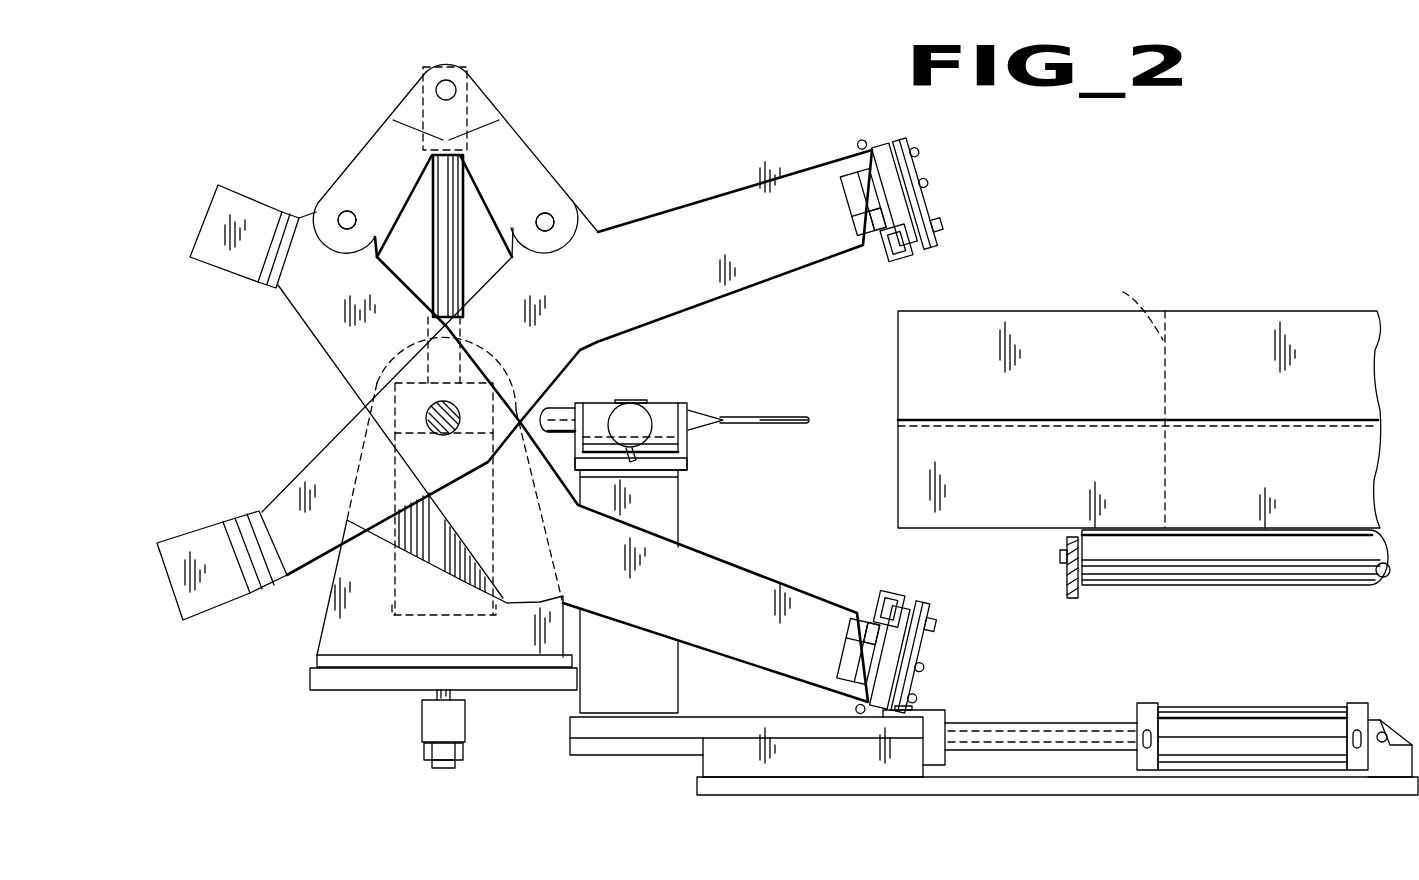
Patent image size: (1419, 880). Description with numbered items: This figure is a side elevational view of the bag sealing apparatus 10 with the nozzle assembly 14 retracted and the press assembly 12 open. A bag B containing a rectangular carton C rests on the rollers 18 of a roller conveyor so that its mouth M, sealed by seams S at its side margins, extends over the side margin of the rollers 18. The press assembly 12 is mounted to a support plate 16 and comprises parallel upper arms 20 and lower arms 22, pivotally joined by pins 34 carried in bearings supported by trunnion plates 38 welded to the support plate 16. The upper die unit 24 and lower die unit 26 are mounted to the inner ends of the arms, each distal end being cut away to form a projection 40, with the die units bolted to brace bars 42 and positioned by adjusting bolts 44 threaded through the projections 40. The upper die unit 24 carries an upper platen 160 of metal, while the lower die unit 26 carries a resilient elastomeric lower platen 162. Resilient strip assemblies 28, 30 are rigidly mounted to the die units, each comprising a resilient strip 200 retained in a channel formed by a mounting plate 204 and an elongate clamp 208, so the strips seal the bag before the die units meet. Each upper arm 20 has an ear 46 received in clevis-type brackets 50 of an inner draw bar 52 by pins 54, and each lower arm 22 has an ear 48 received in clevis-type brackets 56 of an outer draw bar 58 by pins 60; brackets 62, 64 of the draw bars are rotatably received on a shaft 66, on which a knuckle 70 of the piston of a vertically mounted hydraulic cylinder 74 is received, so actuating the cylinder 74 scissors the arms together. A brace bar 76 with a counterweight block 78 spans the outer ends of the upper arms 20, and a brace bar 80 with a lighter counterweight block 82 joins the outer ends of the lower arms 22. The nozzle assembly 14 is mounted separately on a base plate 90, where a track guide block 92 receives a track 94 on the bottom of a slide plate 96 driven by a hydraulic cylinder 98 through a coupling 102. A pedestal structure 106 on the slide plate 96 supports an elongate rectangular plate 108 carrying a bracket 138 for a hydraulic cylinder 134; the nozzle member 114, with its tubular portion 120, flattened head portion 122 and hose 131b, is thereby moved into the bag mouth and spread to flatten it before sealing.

The bag sealing apparatus 10 is at (688, 97).
The press assembly 12 is at (305, 327).
The nozzle assembly 14 is at (692, 478).
The support plate 16 is at (310, 681).
The rollers 18 is at (1210, 585).
The upper arms 20 is at (665, 263).
The lower arms 22 is at (712, 603).
The upper die unit 24 is at (850, 205).
The lower die unit 26 is at (845, 653).
The resilient strip assembly 28 is at (950, 226).
The resilient strip assembly 30 is at (942, 614).
The pins 34 is at (443, 436).
The trunnion plates 38 is at (327, 610).
The projection 40 is at (874, 148).
The brace bars 42 is at (855, 225).
The adjusting bolts 44 is at (862, 142).
The ear 46 is at (565, 194).
The ear 48 is at (328, 192).
The clevis-type brackets 50 is at (572, 203).
The inner draw bar 52 is at (503, 124).
The pins 54 is at (535, 222).
The clevis-type brackets 56 is at (332, 210).
The outer draw bar 58 is at (392, 130).
The pins 60 is at (357, 221).
The brackets 62 is at (490, 102).
The brackets 64 is at (397, 106).
The shaft 66 is at (457, 88).
The knuckle 70 is at (420, 93).
The hydraulic cylinder 74 is at (432, 565).
The brace bar 76 is at (247, 520).
The counterweight block 78 is at (197, 535).
The brace bar 80 is at (268, 283).
The counterweight block 82 is at (203, 256).
The base plate 90 is at (700, 790).
The track guide block 92 is at (705, 769).
The track 94 is at (575, 751).
The slide plate 96 is at (575, 731).
The hydraulic cylinder 98 is at (1247, 714).
The coupling 102 is at (948, 717).
The pedestal structure 106 is at (676, 513).
The elongate rectangular plate 108 is at (682, 464).
The nozzle member 114 is at (792, 415).
The tubular portion 120 is at (696, 410).
The flattened head portion 122 is at (732, 416).
The hose 131b is at (560, 410).
The hydraulic cylinder 134 is at (645, 436).
The bracket 138 is at (682, 442).
The upper platen 160 is at (884, 252).
The lower platen 162 is at (885, 582).
The resilient strip 200 is at (940, 245).
The mounting plate 204 is at (905, 170).
The elongate clamp 208 is at (942, 227).
The mouth M is at (898, 347).
The seams S is at (1230, 420).
The bag B is at (1163, 311).
The carton C is at (1138, 302).